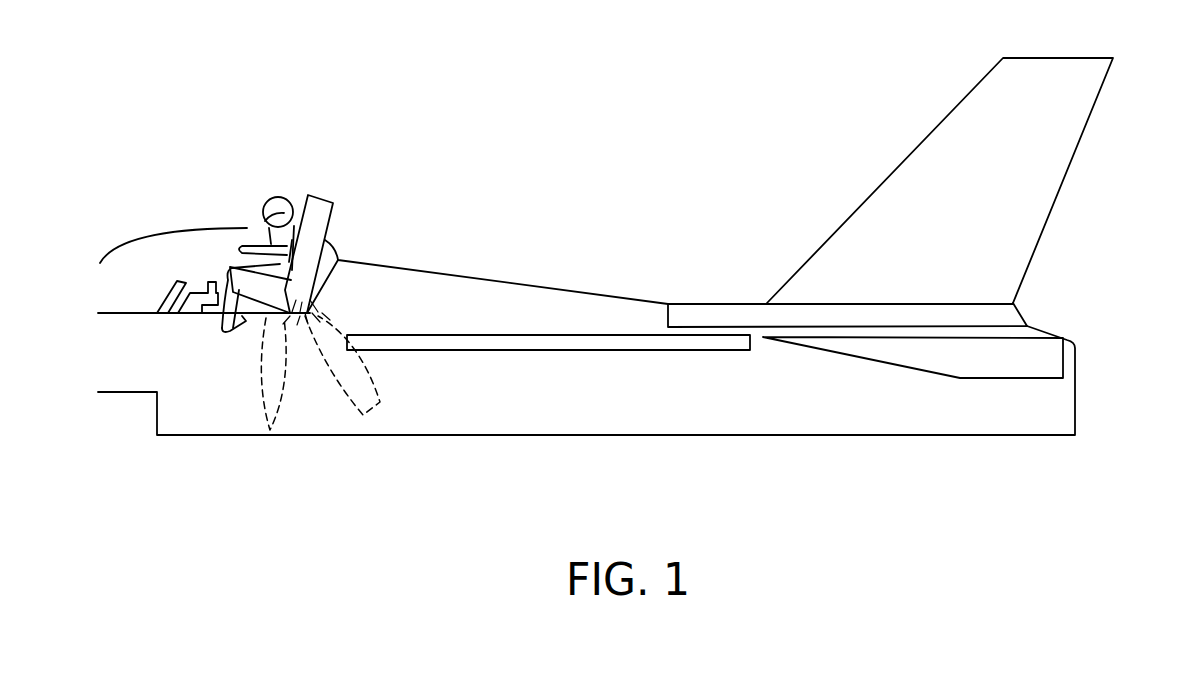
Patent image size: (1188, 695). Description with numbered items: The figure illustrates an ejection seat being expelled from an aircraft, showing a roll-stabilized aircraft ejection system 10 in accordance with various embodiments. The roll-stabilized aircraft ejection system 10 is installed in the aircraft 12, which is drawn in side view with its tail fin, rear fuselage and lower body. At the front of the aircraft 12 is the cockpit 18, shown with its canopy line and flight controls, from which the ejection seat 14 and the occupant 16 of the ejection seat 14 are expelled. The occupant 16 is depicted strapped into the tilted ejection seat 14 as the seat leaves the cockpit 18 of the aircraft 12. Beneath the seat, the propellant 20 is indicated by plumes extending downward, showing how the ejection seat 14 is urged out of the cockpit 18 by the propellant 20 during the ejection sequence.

The roll-stabilized aircraft ejection system 10 is at (510, 156).
The aircraft 12 is at (609, 403).
The ejection seat 14 is at (318, 217).
The occupant 16 is at (275, 207).
The cockpit 18 is at (144, 287).
The propellant 20 is at (317, 438).